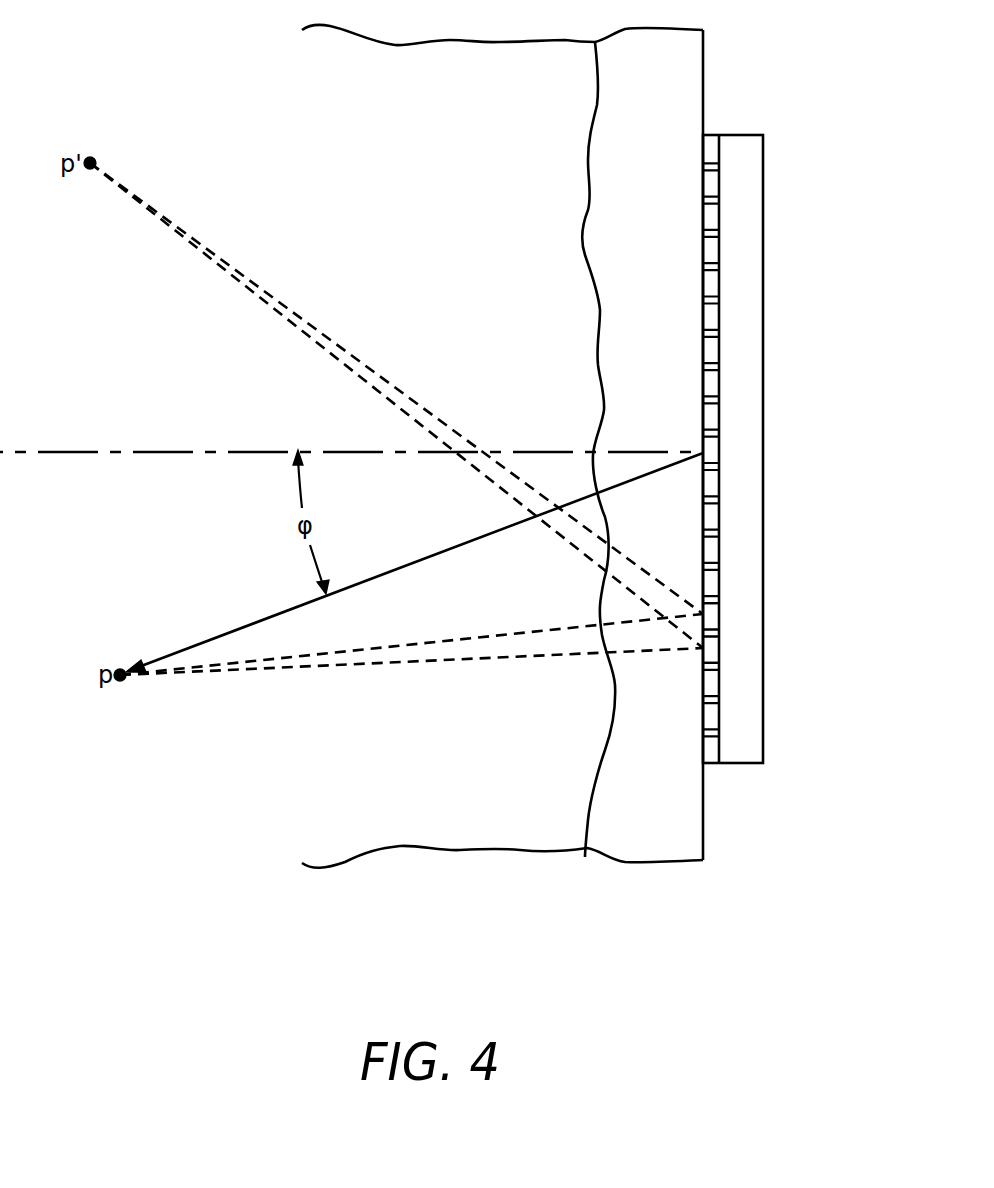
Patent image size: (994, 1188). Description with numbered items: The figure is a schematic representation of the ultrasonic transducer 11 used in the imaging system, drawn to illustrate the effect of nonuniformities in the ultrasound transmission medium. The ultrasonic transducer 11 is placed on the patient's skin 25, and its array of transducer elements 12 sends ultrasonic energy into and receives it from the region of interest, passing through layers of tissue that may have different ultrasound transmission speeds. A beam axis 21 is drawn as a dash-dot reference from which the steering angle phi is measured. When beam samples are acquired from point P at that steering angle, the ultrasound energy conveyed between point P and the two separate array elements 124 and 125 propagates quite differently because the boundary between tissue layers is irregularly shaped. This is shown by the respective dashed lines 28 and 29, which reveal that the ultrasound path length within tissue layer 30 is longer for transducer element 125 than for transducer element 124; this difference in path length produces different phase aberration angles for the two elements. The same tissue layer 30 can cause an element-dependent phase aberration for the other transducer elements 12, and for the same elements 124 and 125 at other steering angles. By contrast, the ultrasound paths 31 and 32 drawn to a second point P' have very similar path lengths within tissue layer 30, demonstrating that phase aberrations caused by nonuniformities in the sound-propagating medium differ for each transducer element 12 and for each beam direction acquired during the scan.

The ultrasonic transducer 11 is at (739, 446).
The transducer elements 12 is at (705, 182).
The transducer element 125 is at (703, 613).
The transducer element 124 is at (703, 653).
The optical axis 21 is at (112, 452).
The patient's skin 25 is at (703, 832).
The dashed line 28 is at (468, 658).
The dashed line 29 is at (543, 630).
The tissue layer 30 is at (637, 843).
The ultrasound path 31 is at (288, 320).
The ultrasound path 32 is at (367, 368).